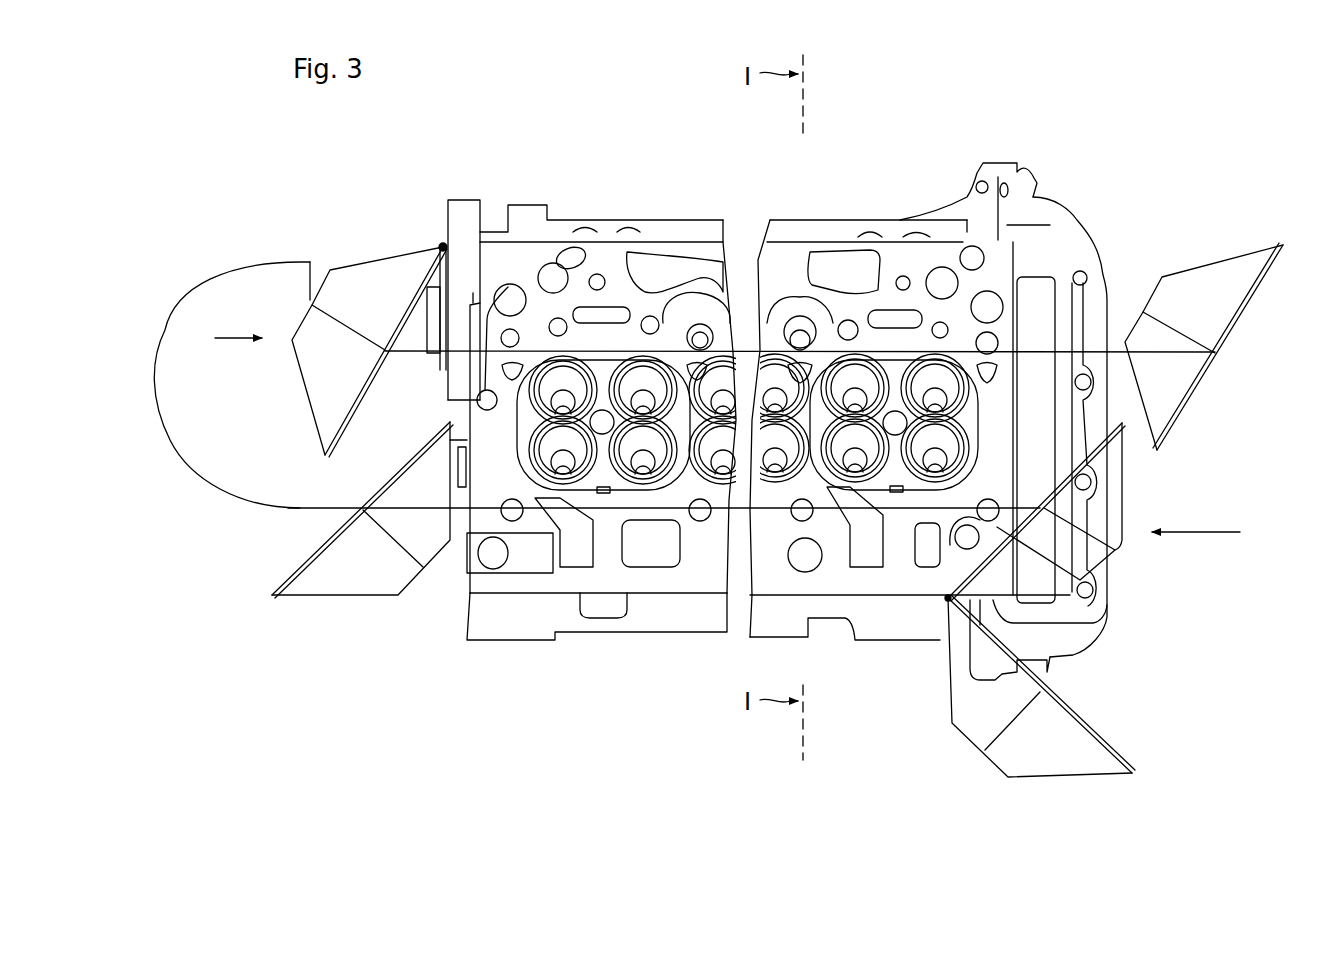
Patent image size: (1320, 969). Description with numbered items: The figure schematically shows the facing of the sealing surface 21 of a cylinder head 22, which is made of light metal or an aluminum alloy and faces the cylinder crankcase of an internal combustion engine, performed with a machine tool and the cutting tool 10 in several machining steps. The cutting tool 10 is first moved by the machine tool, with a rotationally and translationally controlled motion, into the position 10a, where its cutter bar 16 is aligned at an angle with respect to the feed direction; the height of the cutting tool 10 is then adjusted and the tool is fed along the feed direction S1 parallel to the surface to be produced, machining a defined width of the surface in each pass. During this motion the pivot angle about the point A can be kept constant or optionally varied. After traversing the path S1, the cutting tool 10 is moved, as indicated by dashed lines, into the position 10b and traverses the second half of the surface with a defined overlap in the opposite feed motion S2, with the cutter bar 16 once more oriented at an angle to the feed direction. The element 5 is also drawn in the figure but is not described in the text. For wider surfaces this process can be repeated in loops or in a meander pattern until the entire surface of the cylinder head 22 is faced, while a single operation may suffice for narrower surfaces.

The fan housing 5 is at (232, 497).
The cutting tool 10 is at (330, 600).
The position of the cutting tool 10a is at (1122, 547).
The position of the cutting tool 10b is at (353, 260).
The cutter bar 16 is at (418, 258).
The point A is at (447, 246).
The feed direction S1 is at (608, 510).
The feed motion S2 is at (572, 350).
The sealing surface 21 is at (888, 263).
The cylinder head 22 is at (1110, 203).